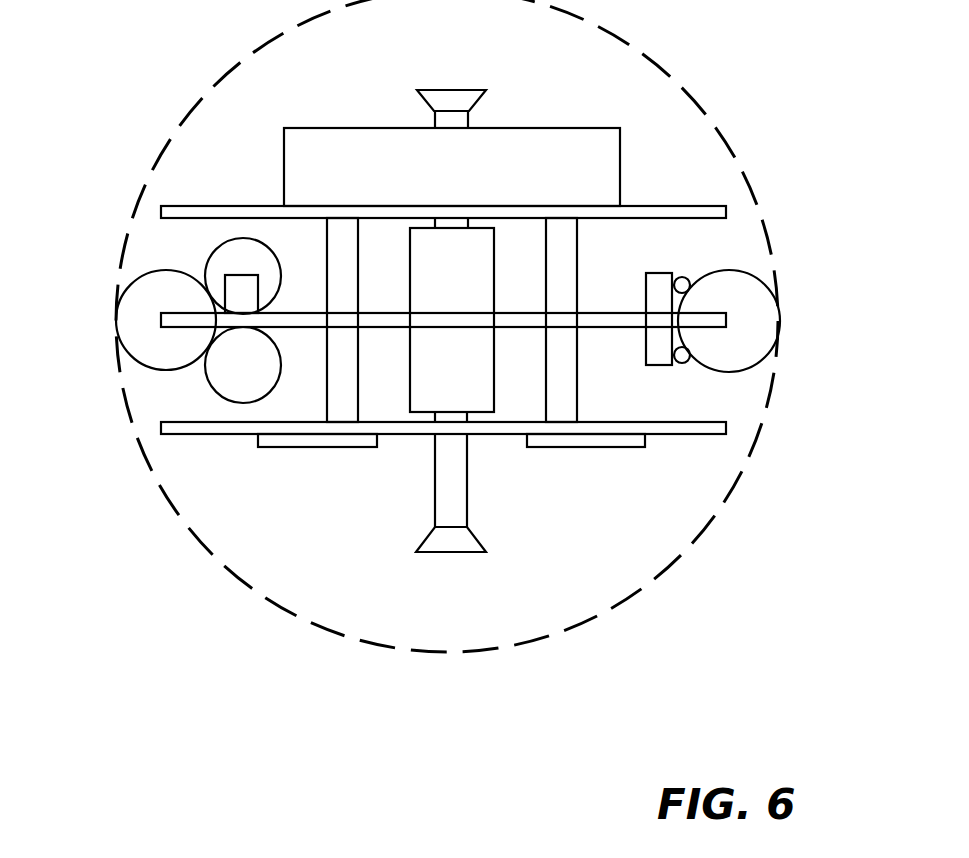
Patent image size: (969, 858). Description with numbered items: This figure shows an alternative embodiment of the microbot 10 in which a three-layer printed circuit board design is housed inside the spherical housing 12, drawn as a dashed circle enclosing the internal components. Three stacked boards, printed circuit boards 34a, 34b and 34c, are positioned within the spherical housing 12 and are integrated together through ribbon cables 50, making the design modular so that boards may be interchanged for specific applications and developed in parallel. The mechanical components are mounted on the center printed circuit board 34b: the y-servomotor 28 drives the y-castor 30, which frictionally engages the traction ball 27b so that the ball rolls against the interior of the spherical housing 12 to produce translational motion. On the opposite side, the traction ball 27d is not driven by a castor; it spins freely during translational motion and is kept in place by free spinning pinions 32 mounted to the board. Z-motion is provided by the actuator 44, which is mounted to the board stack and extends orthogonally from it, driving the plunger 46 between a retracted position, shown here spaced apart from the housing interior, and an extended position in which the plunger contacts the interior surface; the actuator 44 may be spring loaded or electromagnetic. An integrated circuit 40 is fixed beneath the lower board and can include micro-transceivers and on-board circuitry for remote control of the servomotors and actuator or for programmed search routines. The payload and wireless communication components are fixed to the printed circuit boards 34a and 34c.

The microbot 10 is at (445, 381).
The spherical housing 12 is at (265, 596).
The traction ball 27b is at (155, 352).
The traction ball 27d is at (753, 303).
The y-servomotor 28 is at (238, 288).
The y-castor 30 is at (242, 250).
The free spinning pinions 32 is at (683, 362).
The printed circuit board 34a is at (175, 206).
The center printed circuit board 34b is at (608, 310).
The printed circuit board 34c is at (205, 434).
The integrated circuit 40 is at (310, 447).
The actuator 44 is at (467, 385).
The plunger 46 is at (456, 90).
The ribbon cables 50 is at (579, 233).